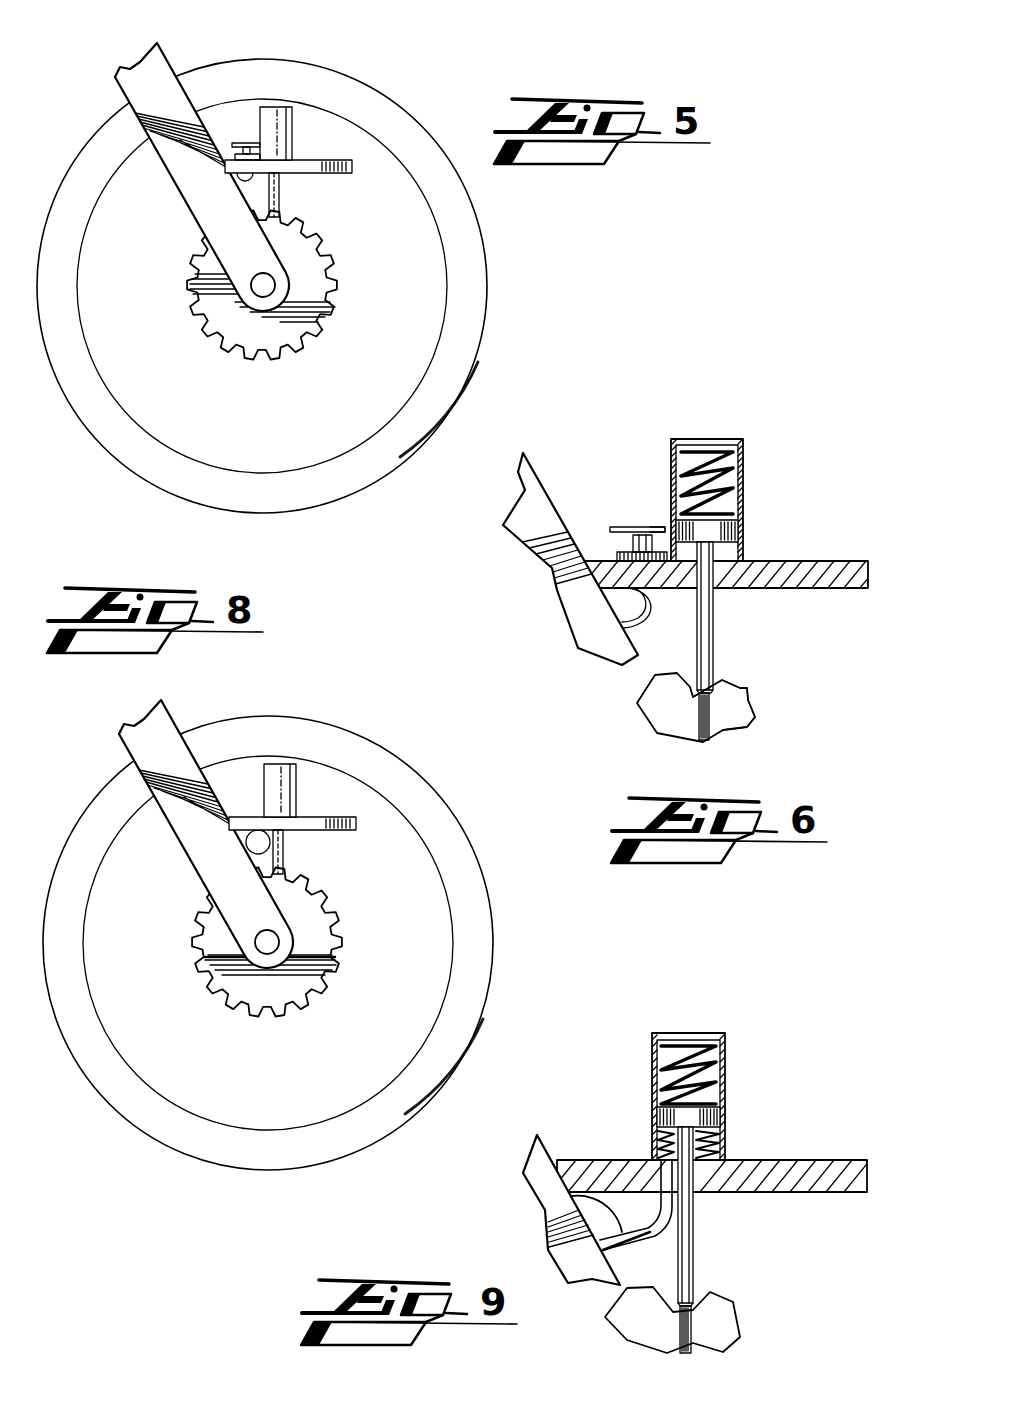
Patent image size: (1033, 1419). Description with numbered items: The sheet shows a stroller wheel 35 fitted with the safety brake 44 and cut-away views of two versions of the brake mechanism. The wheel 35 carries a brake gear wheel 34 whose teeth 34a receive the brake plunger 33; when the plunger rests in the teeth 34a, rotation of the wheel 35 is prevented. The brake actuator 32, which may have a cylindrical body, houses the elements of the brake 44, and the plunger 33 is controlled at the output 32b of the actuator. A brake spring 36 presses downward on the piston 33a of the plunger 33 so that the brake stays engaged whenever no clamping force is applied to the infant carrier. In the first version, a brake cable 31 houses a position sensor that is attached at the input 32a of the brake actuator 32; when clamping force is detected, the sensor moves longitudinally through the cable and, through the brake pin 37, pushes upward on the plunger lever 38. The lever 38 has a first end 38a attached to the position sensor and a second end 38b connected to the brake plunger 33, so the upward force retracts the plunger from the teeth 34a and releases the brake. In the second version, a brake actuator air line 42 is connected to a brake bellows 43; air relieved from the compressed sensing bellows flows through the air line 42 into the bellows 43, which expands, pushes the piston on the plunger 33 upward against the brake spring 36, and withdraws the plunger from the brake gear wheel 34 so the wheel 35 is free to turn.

In FIG. 5, the brake cable 31 is at (238, 192).
In FIG. 6, the brake cable 31 is at (647, 620).
In FIG. 5, the brake actuator 32 is at (278, 107).
In FIG. 8, the brake actuator 32 is at (280, 764).
In FIG. 6, the brake actuator 32 is at (702, 439).
In FIG. 6, the input of the brake actuator 32a is at (573, 590).
In FIG. 6, the output of the brake actuator 32b is at (740, 561).
In FIG. 5, the brake plunger 33 is at (282, 193).
In FIG. 8, the brake plunger 33 is at (283, 860).
In FIG. 6, the brake plunger 33 is at (715, 608).
In FIG. 9, the brake plunger 33 is at (693, 1238).
In FIG. 6, the piston 33a is at (738, 535).
In FIG. 9, the piston 33a is at (675, 1113).
In FIG. 5, the brake gear wheel 34 is at (200, 323).
In FIG. 8, the brake gear wheel 34 is at (335, 908).
In FIG. 6, the brake gear wheel 34 is at (735, 722).
In FIG. 9, the brake gear wheel 34 is at (727, 1288).
In FIG. 5, the teeth 34a is at (333, 317).
In FIG. 6, the teeth 34a is at (750, 697).
In FIG. 5, the wheel 35 is at (378, 90).
In FIG. 8, the wheel 35 is at (397, 757).
In FIG. 6, the brake spring 36 is at (743, 453).
In FIG. 9, the brake spring 36 is at (725, 1043).
In FIG. 6, the brake pin 37 is at (633, 543).
In FIG. 6, the plunger lever 38 is at (638, 506).
In FIG. 6, the first end of the plunger lever 38a is at (615, 541).
In FIG. 6, the second end of the plunger lever 38b is at (647, 527).
In FIG. 8, the brake actuator air line 42 is at (217, 840).
In FIG. 9, the brake actuator air line 42 is at (568, 1198).
In FIG. 9, the brake bellows 43 is at (725, 1135).
In FIG. 5, the brake 44 is at (306, 126).
In FIG. 6, the brake 44 is at (757, 399).